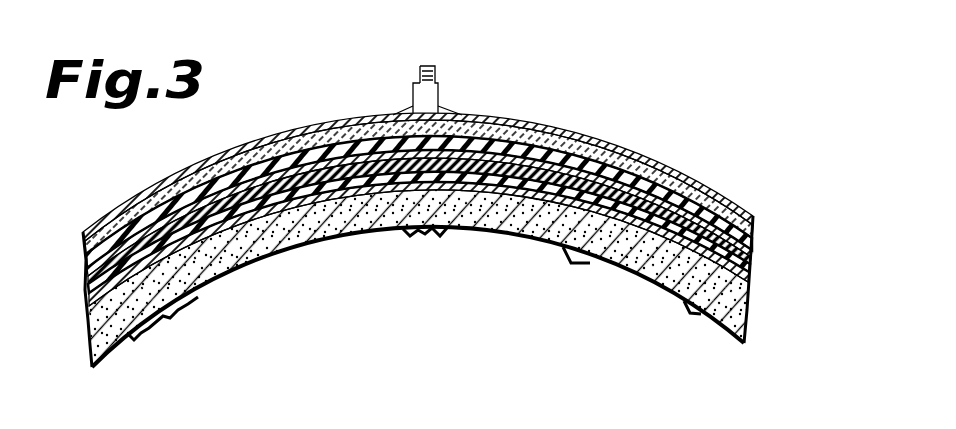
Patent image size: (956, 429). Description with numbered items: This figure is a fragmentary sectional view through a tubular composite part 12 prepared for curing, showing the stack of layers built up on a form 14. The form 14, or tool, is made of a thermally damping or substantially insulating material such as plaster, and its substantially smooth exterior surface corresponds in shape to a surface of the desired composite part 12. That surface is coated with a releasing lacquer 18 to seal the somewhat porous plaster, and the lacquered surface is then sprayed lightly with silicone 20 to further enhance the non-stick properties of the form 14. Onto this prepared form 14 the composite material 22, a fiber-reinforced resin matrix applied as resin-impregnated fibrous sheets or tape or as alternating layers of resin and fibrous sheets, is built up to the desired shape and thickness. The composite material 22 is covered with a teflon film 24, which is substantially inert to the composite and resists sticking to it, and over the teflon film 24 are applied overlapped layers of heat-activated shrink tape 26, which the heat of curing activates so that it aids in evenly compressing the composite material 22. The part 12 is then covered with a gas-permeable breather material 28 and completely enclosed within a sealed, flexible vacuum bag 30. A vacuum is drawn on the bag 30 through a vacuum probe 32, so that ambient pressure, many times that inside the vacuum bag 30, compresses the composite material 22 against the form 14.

The part 12 is at (674, 156).
The form 14 is at (745, 345).
The releasing lacquer 18 is at (745, 328).
The silicone 20 is at (748, 308).
The composite material 22 is at (748, 293).
The teflon film 24 is at (750, 278).
The heat-activated shrink tape 26 is at (752, 258).
The breather material 28 is at (753, 236).
The vacuum bag 30 is at (752, 213).
The vacuum probe 32 is at (437, 98).